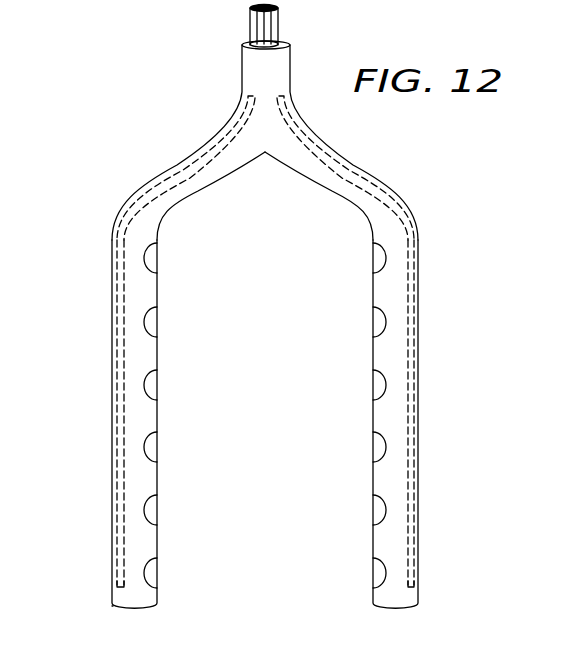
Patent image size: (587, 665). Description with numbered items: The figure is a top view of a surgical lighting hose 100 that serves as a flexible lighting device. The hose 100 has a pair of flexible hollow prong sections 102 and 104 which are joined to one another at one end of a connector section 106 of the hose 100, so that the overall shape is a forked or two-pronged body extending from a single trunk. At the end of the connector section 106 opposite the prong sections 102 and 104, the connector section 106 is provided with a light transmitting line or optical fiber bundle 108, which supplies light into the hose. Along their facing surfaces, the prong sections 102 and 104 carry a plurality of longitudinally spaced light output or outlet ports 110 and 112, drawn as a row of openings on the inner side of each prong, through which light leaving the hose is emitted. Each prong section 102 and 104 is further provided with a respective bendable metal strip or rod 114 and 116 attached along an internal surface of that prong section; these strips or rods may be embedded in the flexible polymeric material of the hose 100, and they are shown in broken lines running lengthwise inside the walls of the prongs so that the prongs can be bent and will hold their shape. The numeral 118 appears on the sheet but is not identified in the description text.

The surgical lighting hose 100 is at (122, 165).
The flexible hollow prong section 102 is at (137, 487).
The flexible hollow prong section 104 is at (393, 478).
The connector section 106 is at (258, 68).
The light transmitting line or optical fiber bundle 108 is at (256, 22).
The light output or outlet ports 110 is at (158, 256).
The light output or outlet ports 112 is at (373, 383).
The bendable metal strip or rod 114 is at (116, 290).
The bendable metal strip or rod 116 is at (421, 261).
The distal end 118 is at (325, 635).